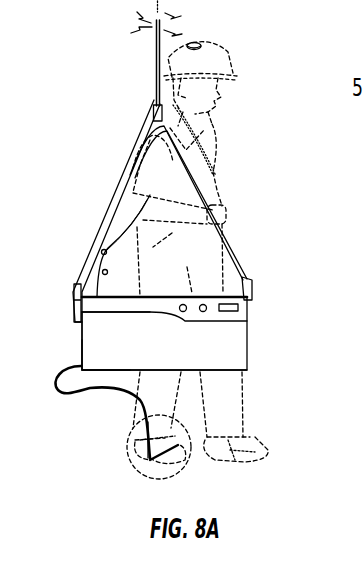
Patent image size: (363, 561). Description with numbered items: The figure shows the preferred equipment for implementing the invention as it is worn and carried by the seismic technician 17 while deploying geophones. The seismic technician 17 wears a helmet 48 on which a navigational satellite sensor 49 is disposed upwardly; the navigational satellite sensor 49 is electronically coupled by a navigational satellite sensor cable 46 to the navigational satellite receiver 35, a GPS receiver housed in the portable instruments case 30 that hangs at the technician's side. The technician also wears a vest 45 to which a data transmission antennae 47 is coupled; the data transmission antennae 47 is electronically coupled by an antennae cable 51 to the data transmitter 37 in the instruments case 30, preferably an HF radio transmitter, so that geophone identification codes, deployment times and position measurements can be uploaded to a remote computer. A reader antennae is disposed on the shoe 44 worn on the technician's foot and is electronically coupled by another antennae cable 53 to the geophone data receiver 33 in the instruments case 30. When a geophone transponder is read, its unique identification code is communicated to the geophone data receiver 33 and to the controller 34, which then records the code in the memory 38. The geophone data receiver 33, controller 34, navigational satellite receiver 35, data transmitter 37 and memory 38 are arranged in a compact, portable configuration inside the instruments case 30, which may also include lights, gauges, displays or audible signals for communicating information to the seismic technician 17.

The seismic technician 17 is at (226, 146).
The instruments case 30 is at (235, 335).
The geophone data receiver 33 is at (220, 342).
The controller 34 is at (102, 348).
The navigational satellite receiver 35 is at (102, 337).
The data transmitter 37 is at (190, 342).
The memory 38 is at (170, 352).
The shoe 44 is at (132, 480).
The vest 45 is at (213, 175).
The navigational satellite sensor cable 46 is at (105, 240).
The data transmission antennae 47 is at (154, 57).
The helmet 48 is at (230, 43).
The navigational satellite sensor 49 is at (191, 42).
The antennae cable 51 is at (103, 272).
The antennae cable 53 is at (88, 392).